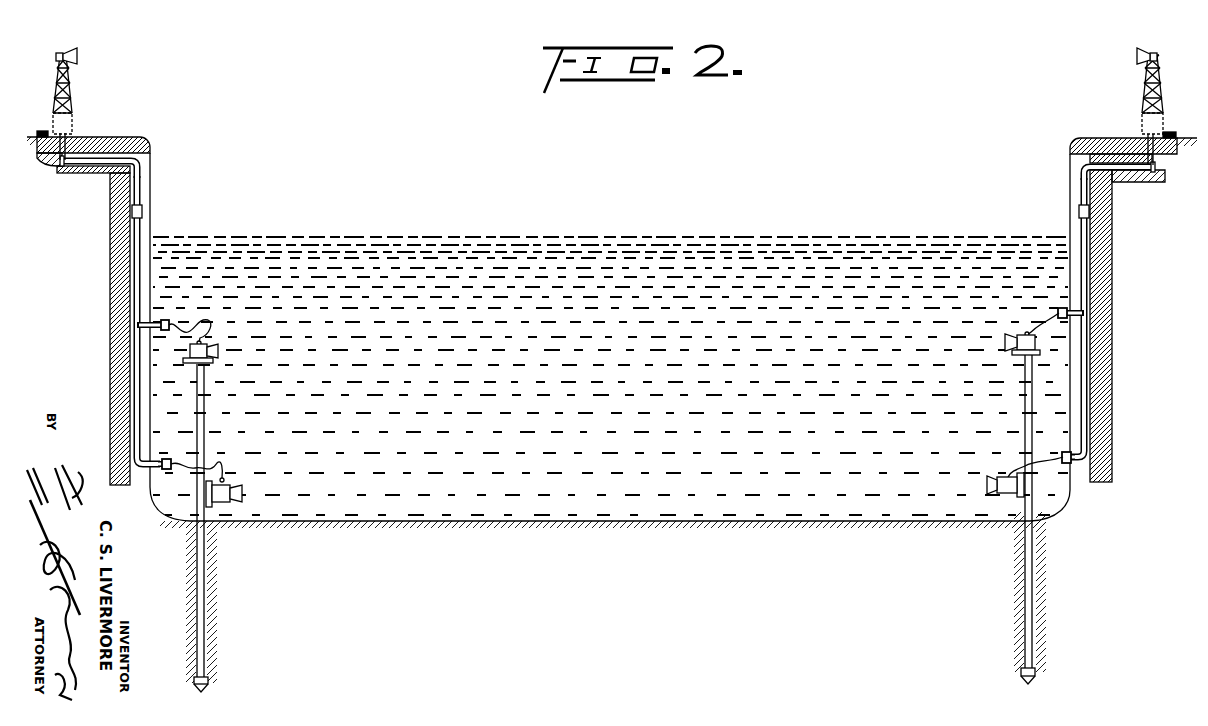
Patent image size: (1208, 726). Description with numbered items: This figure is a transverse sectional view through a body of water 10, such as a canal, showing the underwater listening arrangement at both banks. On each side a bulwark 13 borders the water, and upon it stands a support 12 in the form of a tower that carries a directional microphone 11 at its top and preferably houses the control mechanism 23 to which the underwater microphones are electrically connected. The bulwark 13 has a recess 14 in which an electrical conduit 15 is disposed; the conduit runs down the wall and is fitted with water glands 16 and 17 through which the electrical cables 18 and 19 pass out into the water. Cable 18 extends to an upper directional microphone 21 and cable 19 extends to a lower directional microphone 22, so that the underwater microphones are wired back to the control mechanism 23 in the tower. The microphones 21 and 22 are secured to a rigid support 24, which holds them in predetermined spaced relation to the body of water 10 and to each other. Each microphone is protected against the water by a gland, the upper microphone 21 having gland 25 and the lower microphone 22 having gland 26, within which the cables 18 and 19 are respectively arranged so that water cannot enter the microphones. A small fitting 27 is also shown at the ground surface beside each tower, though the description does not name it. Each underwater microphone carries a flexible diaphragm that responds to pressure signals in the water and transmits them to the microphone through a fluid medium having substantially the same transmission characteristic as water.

The body of water 10 is at (816, 258).
The directional microphone 11 is at (78, 55).
The support 12 is at (70, 82).
The bulwark 13 is at (90, 142).
The recess 14 is at (148, 165).
The electrical conduit 15 is at (143, 188).
The water gland 16 is at (168, 323).
The water gland 17 is at (168, 462).
The electrical cable 18 is at (205, 326).
The electrical cable 19 is at (224, 477).
The directional microphone 21 is at (219, 352).
The directional microphone 22 is at (243, 493).
The control mechanism 23 is at (74, 118).
The rigid support 24 is at (207, 408).
The gland 25 is at (230, 342).
The gland 26 is at (238, 488).
The marker 27 is at (42, 131).